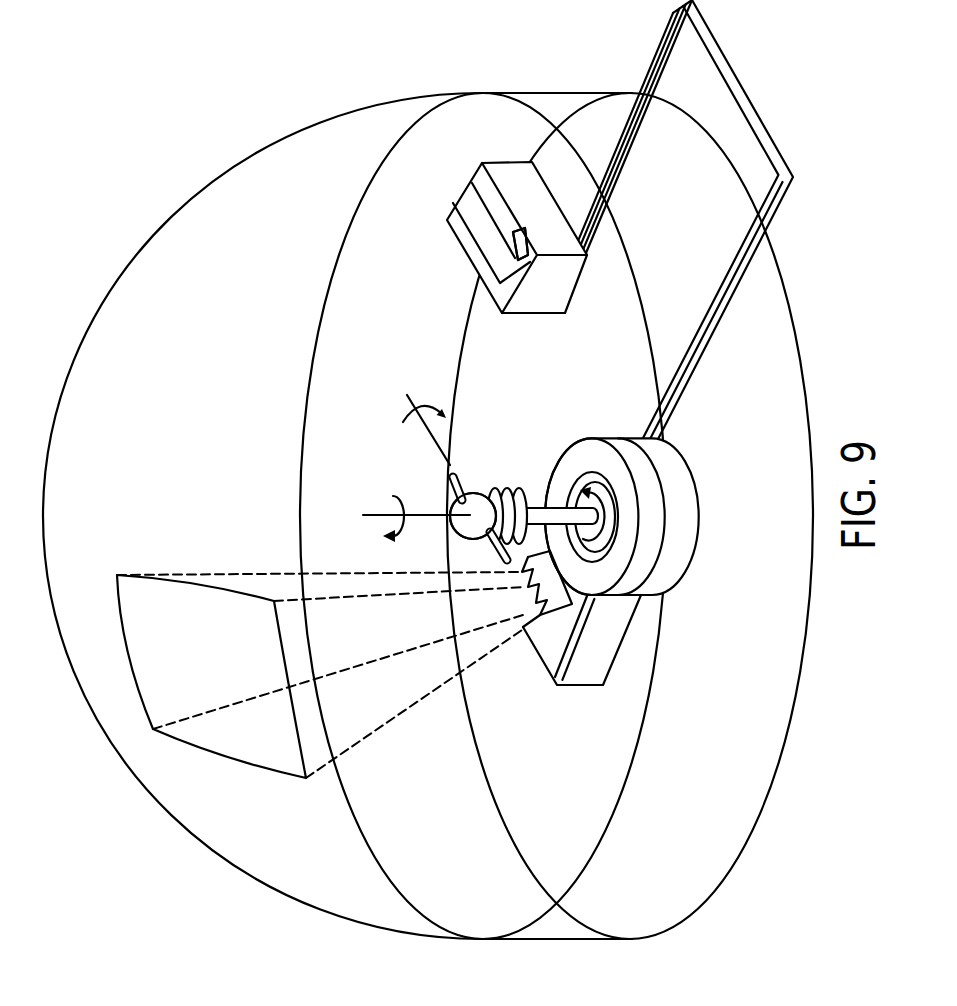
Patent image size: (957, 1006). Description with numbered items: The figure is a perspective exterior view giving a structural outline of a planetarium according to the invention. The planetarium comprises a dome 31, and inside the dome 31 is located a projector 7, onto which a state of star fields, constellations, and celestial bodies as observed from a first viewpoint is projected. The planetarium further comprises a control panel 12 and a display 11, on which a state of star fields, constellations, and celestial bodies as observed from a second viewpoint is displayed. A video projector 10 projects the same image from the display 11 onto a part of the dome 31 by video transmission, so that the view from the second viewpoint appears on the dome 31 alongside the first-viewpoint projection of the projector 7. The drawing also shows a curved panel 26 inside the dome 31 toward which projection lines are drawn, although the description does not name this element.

The projector 7 is at (497, 484).
The video projector 10 is at (570, 613).
The display 11 is at (528, 265).
The control panel 12 is at (465, 253).
The curved reflector 26 is at (140, 616).
The dome 31 is at (175, 245).